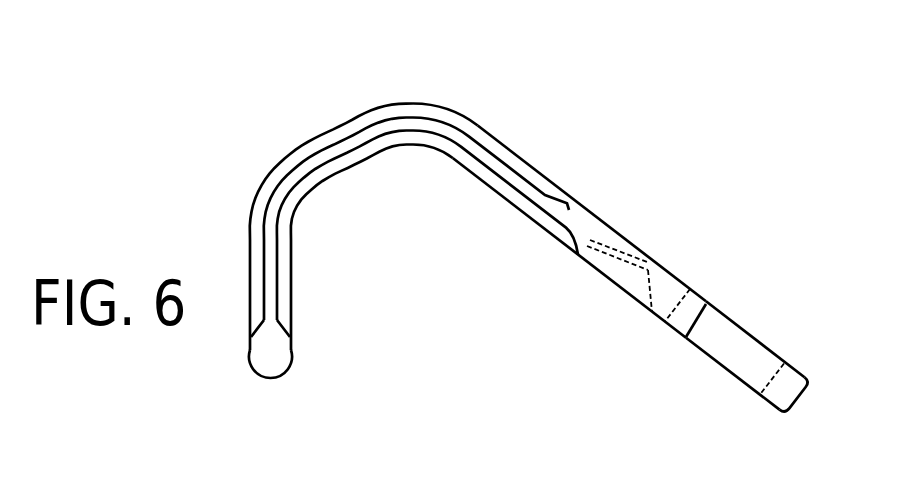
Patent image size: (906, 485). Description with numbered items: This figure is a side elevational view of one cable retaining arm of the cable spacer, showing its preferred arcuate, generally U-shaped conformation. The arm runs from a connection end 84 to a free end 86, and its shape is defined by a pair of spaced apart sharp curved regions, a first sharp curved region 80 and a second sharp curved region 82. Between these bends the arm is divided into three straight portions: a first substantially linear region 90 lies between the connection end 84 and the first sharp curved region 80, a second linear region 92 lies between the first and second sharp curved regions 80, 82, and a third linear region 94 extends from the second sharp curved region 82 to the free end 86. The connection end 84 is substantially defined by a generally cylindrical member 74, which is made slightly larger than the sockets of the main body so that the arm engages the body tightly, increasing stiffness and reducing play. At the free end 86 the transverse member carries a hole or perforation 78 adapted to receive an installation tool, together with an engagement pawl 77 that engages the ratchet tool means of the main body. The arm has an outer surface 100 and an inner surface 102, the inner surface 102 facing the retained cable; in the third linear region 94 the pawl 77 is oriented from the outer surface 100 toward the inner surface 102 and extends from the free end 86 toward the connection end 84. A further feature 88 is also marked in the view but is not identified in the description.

The cylindrical member 74 is at (268, 350).
The engagement pawl 77 is at (605, 233).
The hole or perforation 78 is at (730, 343).
The first sharp curved region 80 is at (463, 254).
The second sharp curved region 82 is at (392, 89).
The connection end 84 is at (307, 372).
The free end 86 is at (770, 426).
The reference (partially shown) 88 is at (166, 480).
The first substantially linear region 90 is at (235, 250).
The second linear region 92 is at (316, 120).
The third linear region 94 is at (606, 191).
The outer surface 100 is at (412, 235).
The inner surface 102 is at (493, 189).